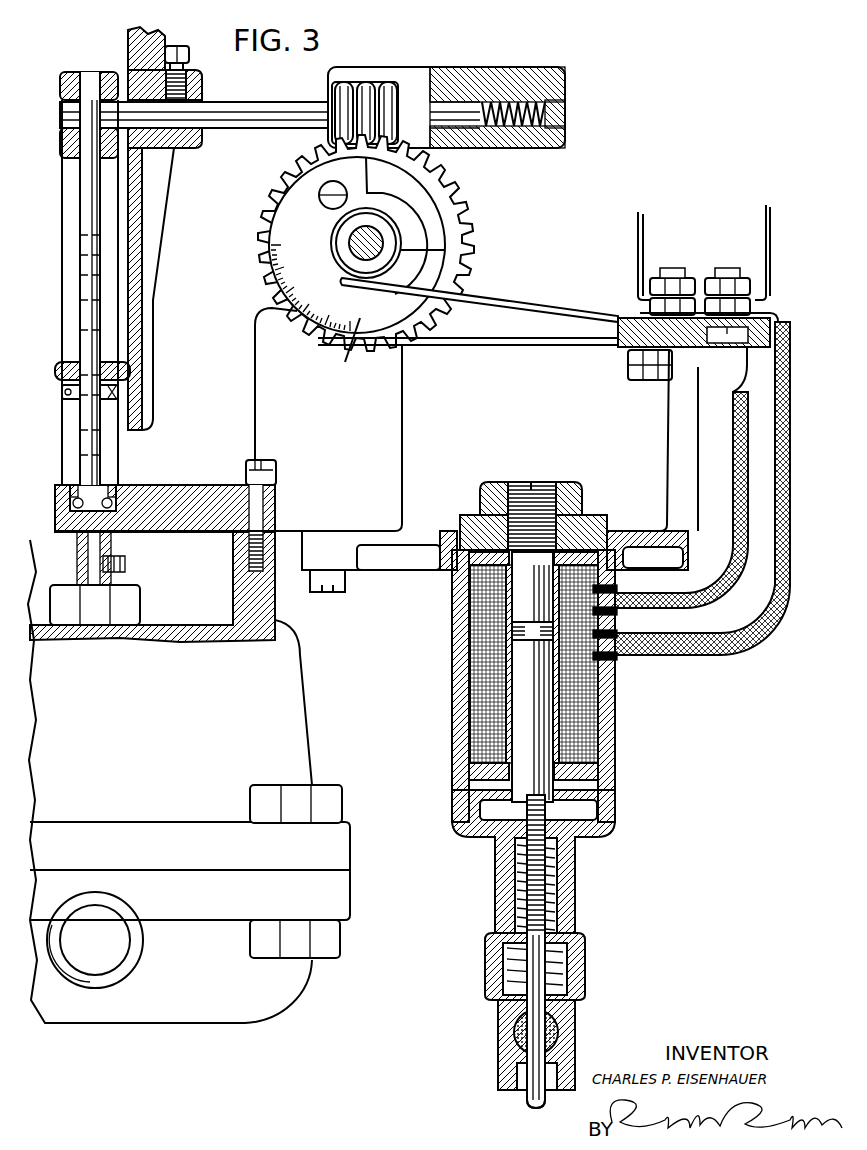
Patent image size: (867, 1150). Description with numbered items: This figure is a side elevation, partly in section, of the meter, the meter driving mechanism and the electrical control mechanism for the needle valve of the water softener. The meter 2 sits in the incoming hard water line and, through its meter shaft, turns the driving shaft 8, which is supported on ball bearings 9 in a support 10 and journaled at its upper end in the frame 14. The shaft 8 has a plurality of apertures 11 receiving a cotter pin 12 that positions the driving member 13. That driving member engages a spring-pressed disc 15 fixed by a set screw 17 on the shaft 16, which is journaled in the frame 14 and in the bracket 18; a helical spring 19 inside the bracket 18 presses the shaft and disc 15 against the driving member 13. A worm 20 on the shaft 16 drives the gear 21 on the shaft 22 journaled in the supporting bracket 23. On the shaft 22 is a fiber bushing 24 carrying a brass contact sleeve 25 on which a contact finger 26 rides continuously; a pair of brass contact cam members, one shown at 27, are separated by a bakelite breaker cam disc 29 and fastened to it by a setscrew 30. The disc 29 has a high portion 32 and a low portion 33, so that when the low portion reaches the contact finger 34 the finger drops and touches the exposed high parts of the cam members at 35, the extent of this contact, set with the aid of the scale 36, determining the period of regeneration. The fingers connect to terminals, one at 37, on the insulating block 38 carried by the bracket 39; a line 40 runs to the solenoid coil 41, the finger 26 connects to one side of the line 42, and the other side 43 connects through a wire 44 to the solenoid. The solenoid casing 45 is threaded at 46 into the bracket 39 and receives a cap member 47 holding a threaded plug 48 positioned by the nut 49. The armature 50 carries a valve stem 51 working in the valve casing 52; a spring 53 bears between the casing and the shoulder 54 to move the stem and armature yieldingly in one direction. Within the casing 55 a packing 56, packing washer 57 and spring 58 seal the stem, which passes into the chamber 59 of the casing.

The meter 2 is at (300, 708).
The driving shaft 8 is at (80, 458).
The ball bearings 9 is at (72, 500).
The support 10 is at (214, 485).
The apertures 11 is at (83, 430).
The cotter pin 12 is at (64, 391).
The driving member 13 is at (58, 366).
The frame 14 is at (60, 143).
The spring-pressed disc 15 is at (142, 270).
The shaft 16 is at (245, 128).
The set screw 17 is at (190, 54).
The bracket 18 is at (470, 68).
The helical spring 19 is at (522, 100).
The worm 20 is at (370, 85).
The gear 21 is at (462, 183).
The shaft 22 is at (385, 243).
The supporting bracket 23 is at (402, 377).
The fiber bushing 24 is at (370, 220).
The brass contact sleeve 25 is at (396, 222).
The contact finger 26 is at (525, 307).
The brass contact cam member 27 is at (425, 267).
The bakelite breaker cam disc 29 is at (405, 177).
The setscrew 30 is at (337, 186).
The high portion 32 is at (300, 318).
The low portion 33 is at (445, 250).
The contact finger 34 is at (522, 345).
The contact portions 35 is at (341, 352).
The scale 36 is at (285, 232).
The terminal 37 is at (641, 381).
The insulating block 38 is at (618, 330).
The bracket 39 is at (668, 457).
The line 40 is at (730, 382).
The solenoid coil 41 is at (478, 707).
The line 42 is at (638, 215).
The line 43 is at (770, 210).
The wire 44 is at (775, 312).
The solenoid casing 45 is at (453, 735).
The threaded connection 46 is at (438, 557).
The cap member 47 is at (463, 515).
The threaded plug 48 is at (523, 482).
The nut 49 is at (487, 482).
The armature 50 is at (517, 795).
The valve stem 51 is at (545, 810).
The valve casing 52 is at (465, 833).
The spring 53 is at (515, 865).
The shoulder 54 is at (498, 930).
The casing 55 is at (498, 1016).
The packing 56 is at (505, 1033).
The packing washer 57 is at (575, 1015).
The spring 58 is at (565, 975).
The chamber 59 is at (520, 1080).